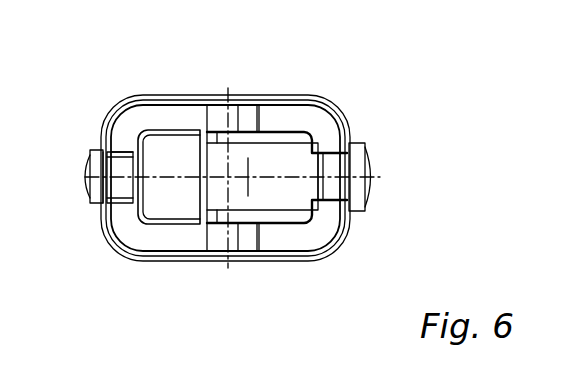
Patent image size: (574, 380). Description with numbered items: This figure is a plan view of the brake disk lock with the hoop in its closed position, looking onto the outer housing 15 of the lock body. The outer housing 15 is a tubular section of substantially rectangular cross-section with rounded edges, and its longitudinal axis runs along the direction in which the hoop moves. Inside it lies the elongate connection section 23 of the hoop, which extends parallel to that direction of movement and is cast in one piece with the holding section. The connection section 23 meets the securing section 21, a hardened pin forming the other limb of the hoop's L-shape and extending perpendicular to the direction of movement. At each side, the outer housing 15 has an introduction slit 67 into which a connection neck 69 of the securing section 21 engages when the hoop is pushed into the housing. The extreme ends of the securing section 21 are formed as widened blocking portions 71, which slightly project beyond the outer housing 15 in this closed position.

The outer housing 15 is at (303, 113).
The securing section 21 is at (262, 165).
The connection section 23 is at (175, 152).
The introduction slit 67 is at (118, 140).
The connection neck 69 is at (122, 186).
The widened blocking portion 71 is at (98, 167).